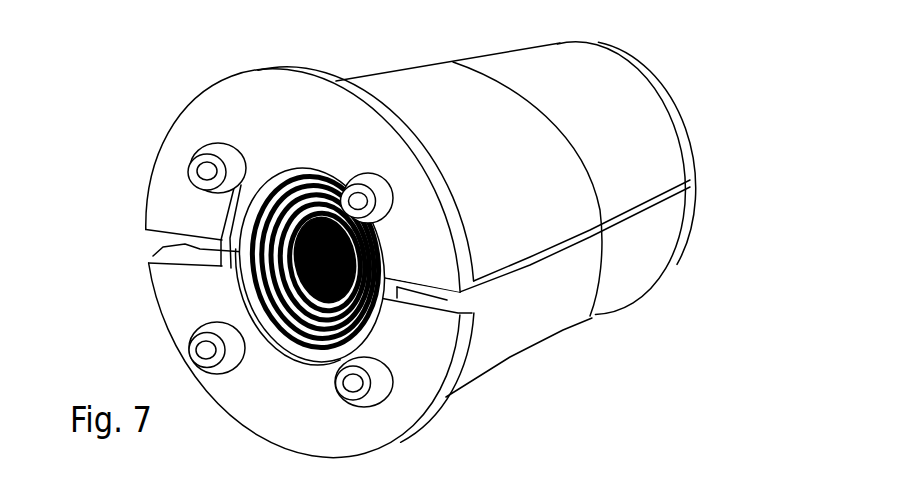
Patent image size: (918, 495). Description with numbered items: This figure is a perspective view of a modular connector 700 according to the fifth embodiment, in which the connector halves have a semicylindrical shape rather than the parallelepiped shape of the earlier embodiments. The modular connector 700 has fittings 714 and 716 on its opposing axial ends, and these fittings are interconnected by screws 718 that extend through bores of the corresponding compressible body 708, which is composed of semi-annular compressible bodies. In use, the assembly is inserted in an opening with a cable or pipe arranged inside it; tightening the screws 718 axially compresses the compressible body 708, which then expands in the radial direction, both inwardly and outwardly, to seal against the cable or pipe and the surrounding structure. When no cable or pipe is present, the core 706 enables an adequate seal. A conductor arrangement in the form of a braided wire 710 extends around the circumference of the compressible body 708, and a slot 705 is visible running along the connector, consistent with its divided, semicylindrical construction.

The modular connector 700 is at (402, 236).
The slot 705 is at (144, 224).
The core 706 is at (250, 281).
The compressible body 708 is at (508, 328).
The braided wire 710 is at (608, 196).
The fitting 714 is at (258, 262).
The fitting 716 is at (539, 214).
The screws 718 is at (362, 299).